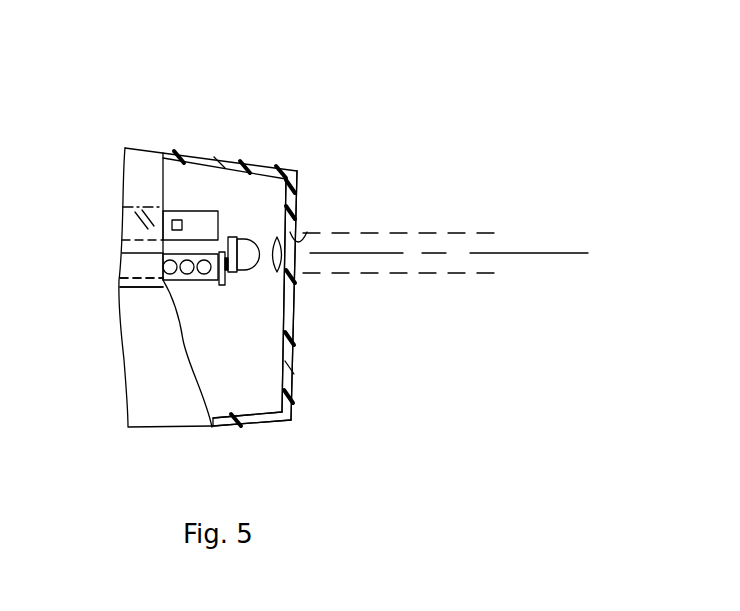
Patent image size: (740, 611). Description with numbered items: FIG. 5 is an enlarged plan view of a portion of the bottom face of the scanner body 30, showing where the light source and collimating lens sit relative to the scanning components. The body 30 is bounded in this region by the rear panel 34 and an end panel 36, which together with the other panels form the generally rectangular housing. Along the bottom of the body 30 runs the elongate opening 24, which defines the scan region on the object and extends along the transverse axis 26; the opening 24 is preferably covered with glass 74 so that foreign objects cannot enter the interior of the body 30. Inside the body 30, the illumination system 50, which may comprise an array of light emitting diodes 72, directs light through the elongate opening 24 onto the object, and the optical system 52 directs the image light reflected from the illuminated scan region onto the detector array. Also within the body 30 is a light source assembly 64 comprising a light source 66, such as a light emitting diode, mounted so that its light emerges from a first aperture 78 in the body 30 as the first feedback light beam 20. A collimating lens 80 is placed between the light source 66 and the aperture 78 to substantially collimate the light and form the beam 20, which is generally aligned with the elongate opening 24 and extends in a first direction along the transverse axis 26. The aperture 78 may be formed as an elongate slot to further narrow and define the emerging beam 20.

The first feedback light beam 20 is at (395, 232).
The elongate opening 24 is at (137, 286).
The transverse axis 26 is at (523, 254).
The body 30 is at (122, 378).
The rear panel 34 is at (227, 427).
The end panel 36 is at (293, 392).
The illumination system 50 is at (197, 211).
The optical system 52 is at (197, 281).
The light source assembly 64 is at (308, 157).
The light source 66 is at (243, 237).
The light emitting diodes 72 is at (174, 220).
The glass 74 is at (140, 258).
The first aperture 78 is at (302, 244).
The collimating lens 80 is at (277, 273).